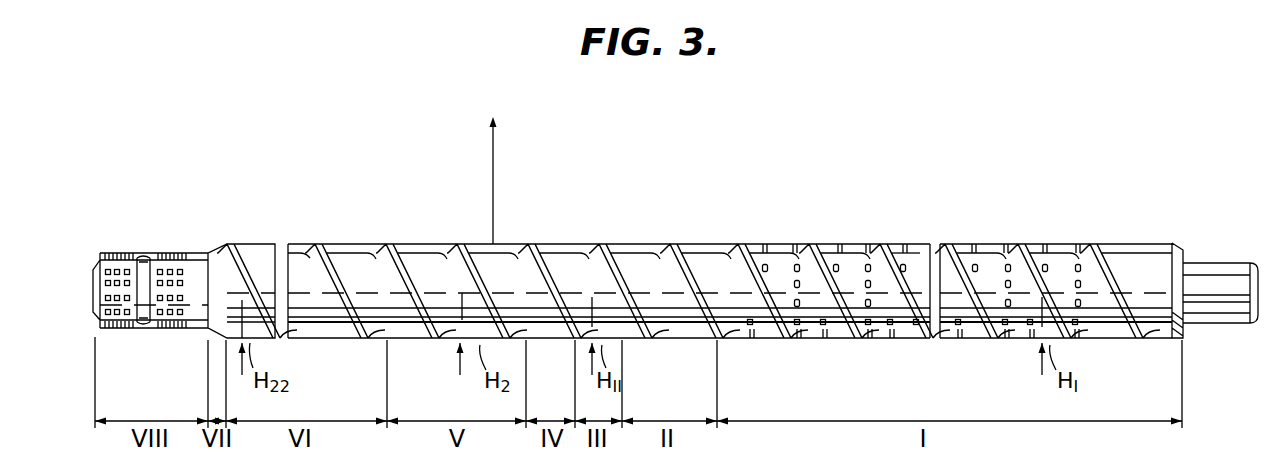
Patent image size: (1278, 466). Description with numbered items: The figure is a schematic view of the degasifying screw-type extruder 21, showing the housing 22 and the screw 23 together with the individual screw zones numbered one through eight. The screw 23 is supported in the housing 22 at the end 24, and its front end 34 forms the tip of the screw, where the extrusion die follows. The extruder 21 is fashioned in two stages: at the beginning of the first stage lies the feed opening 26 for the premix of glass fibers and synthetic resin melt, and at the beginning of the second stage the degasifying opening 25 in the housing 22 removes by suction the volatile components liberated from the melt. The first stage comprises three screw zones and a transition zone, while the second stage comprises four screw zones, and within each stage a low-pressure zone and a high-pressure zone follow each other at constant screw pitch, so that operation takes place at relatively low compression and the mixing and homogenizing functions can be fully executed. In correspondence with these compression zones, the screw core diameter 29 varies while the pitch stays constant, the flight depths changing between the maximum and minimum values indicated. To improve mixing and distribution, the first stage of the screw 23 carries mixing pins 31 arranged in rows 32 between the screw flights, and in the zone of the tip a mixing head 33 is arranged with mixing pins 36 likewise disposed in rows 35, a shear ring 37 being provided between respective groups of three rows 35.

The degasifying extruder 21 is at (697, 242).
The housing 22 is at (922, 243).
The screw 23 is at (638, 258).
The end 24 is at (1208, 263).
The degasifying opening 25 is at (493, 203).
The feed opening 26 is at (1126, 233).
The screw core diameter 29 is at (717, 327).
The mixing pins 31 is at (842, 263).
The rows 32 is at (870, 242).
The mixing head 33 is at (122, 290).
The front end of the screw 34 is at (95, 305).
The rows 35 is at (182, 270).
The mixing pins 36 is at (182, 270).
The shear ring 37 is at (142, 278).